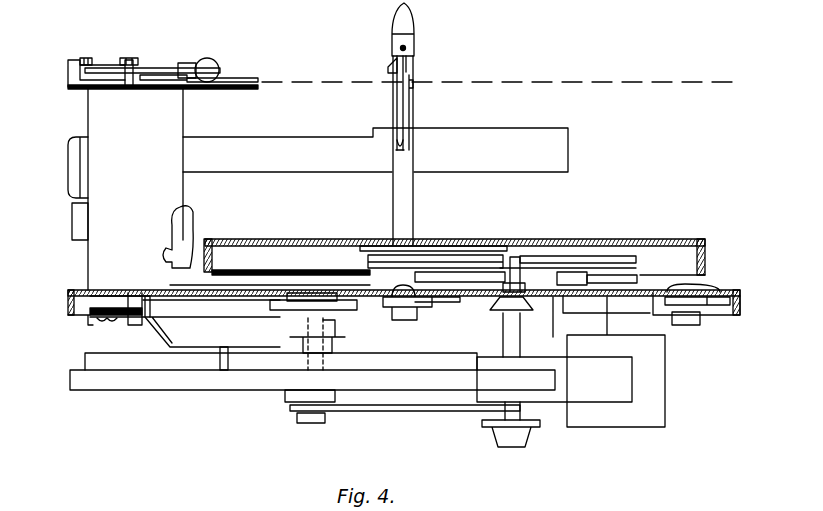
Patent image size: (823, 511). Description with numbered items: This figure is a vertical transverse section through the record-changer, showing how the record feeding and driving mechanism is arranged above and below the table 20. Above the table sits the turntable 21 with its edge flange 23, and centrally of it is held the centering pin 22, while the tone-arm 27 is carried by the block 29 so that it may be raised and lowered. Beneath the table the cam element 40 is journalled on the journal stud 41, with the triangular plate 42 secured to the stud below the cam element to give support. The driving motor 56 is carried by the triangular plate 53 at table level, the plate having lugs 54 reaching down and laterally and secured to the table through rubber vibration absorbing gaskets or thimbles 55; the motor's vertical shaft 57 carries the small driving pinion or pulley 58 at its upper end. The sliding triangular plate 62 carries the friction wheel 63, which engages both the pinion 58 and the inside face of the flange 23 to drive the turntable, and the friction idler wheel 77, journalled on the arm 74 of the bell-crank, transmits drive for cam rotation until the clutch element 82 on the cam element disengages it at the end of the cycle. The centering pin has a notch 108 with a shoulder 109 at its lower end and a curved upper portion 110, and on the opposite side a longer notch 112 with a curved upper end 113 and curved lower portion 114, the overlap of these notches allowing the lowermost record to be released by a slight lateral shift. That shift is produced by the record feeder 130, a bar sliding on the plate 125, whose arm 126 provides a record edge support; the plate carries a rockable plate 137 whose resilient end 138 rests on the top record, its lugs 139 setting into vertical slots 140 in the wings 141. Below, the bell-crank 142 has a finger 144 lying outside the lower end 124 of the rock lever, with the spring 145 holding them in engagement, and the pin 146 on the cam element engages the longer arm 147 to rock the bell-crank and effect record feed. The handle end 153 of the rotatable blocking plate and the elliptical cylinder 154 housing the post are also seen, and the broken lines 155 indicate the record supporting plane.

The table 20 is at (210, 295).
The turntable 21 is at (665, 240).
The centering pin 22 is at (416, 193).
The edge flange 23 is at (707, 256).
The tone-arm 27 is at (326, 175).
The block 29 is at (78, 222).
The cam element 40 is at (112, 360).
The journal stud 41 is at (330, 323).
The triangular plate 42 is at (422, 415).
The triangular plate 53 is at (607, 297).
The lugs 54 is at (393, 306).
The vibration absorbing gaskets or thimbles 55 is at (702, 318).
The motor 56 is at (587, 390).
The vertical shaft 57 is at (495, 300).
The driving pinion or pulley 58 is at (520, 255).
The triangular plate 62 is at (637, 280).
The friction wheel 63 is at (597, 258).
The arm 74 is at (473, 283).
The friction idler wheel 77 is at (458, 240).
The clutch element 82 is at (277, 270).
The notch 108 is at (412, 68).
The shoulder 109 is at (416, 98).
The upper portion of notch 110 is at (409, 60).
The notch 112 is at (397, 100).
The curved upper end 113 is at (388, 68).
The lower portion 114 is at (400, 145).
The lower end of rock lever 124 is at (143, 320).
The plate 125 is at (165, 90).
The arm 126 is at (213, 89).
The record feeder 130 is at (170, 68).
The rockable finger or plate 137 is at (190, 65).
The end portion 138 is at (212, 62).
The lugs 139 is at (127, 89).
The vertical slots 140 is at (138, 52).
The wings 141 is at (137, 60).
The bell-crank 142 is at (167, 332).
The finger 144 is at (115, 292).
The spring 145 is at (107, 326).
The pin 146 is at (286, 330).
The longer arm 147 is at (228, 343).
The end portion 153 is at (182, 222).
The elliptical cylinder 154 is at (84, 172).
The broken lines 155 is at (560, 82).